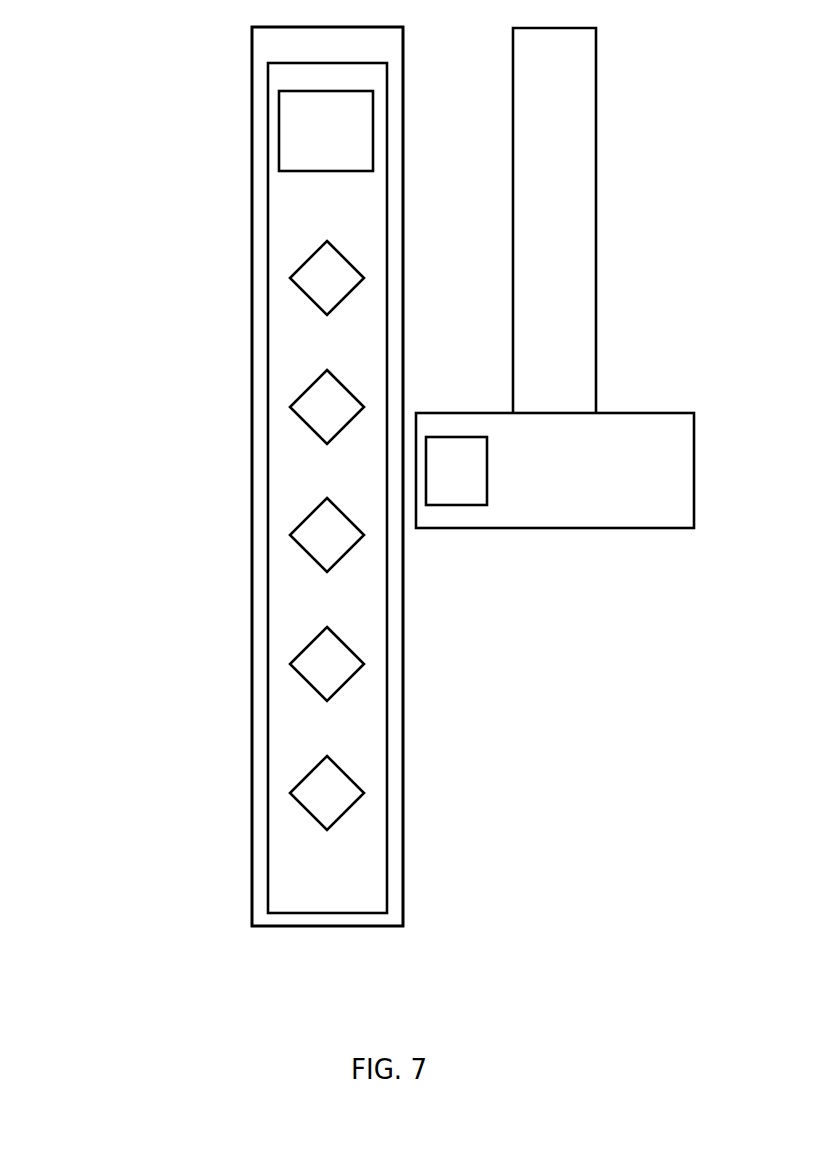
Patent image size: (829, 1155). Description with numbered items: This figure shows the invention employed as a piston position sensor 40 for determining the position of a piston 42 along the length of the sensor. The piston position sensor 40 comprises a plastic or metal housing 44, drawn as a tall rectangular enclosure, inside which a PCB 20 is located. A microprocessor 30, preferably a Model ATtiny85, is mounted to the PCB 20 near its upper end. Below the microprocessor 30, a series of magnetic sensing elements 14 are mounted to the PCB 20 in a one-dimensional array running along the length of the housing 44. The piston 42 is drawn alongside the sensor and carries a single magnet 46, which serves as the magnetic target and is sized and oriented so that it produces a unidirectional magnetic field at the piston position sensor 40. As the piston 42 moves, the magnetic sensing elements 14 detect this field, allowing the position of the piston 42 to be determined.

The piston position sensor 40 is at (150, 448).
The housing 44 is at (252, 596).
The PCB 20 is at (268, 717).
The microprocessor 30 is at (279, 140).
The magnetic sensing elements 14 is at (308, 252).
The piston 42 is at (655, 413).
The single magnet 46 is at (487, 470).